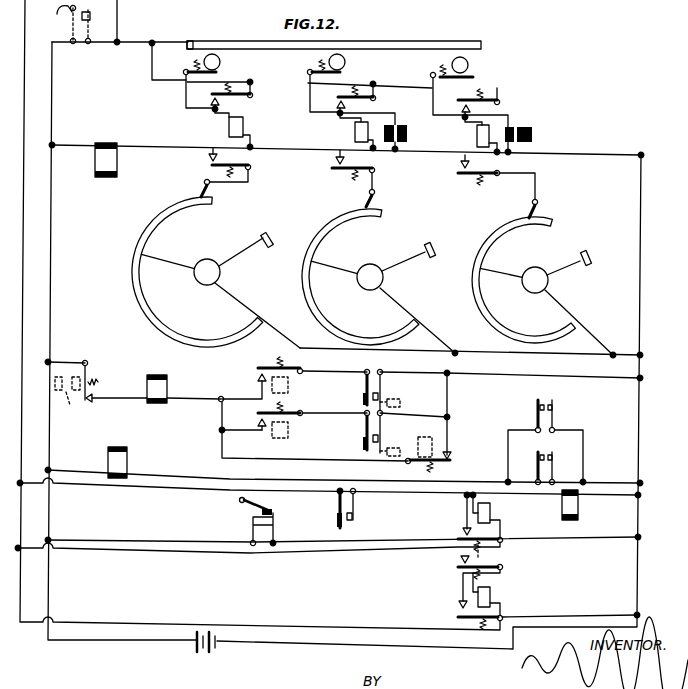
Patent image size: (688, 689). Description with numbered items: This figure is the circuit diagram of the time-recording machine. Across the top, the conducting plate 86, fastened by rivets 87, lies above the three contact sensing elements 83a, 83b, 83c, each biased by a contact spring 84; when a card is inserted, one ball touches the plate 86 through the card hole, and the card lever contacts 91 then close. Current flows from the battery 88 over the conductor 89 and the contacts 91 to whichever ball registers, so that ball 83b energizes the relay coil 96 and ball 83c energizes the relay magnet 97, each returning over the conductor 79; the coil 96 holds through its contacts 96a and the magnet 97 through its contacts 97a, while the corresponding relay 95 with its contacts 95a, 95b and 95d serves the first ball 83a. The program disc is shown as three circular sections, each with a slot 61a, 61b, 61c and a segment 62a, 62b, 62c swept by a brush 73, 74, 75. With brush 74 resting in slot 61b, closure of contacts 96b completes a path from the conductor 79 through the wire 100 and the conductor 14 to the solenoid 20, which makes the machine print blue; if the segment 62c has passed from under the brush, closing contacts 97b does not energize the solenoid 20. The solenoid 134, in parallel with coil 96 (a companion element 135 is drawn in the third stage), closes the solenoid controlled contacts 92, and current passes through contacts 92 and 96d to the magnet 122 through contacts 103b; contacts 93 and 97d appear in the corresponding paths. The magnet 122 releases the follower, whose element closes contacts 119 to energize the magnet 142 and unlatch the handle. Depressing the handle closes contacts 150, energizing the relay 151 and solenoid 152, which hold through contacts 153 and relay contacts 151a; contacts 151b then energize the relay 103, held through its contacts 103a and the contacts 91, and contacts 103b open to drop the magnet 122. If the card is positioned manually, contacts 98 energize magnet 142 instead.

The conductor 14 is at (266, 303).
The solenoid 20 is at (112, 162).
The program disc slot 61a is at (152, 232).
The program disc slot 61b is at (330, 230).
The program disc slot 61c is at (497, 244).
The program disc segment 62a is at (272, 236).
The program disc segment 62b is at (435, 248).
The program disc segment 62c is at (594, 255).
The brush 73 is at (216, 193).
The brush 74 is at (376, 201).
The brush 75 is at (540, 208).
The conductor 79 is at (641, 288).
The contact sensing element 83a is at (221, 63).
The contact sensing element 83b is at (346, 64).
The contact sensing element 83c is at (469, 64).
The contact spring 84 is at (194, 61).
The conducting plate 86 is at (413, 43).
The rivet 87 is at (189, 40).
The battery 88 is at (210, 656).
The conductor 89 is at (50, 305).
The card lever contacts 91 is at (89, 12).
The solenoid controlled contacts 92 is at (383, 400).
The thermostatic switch 93 is at (365, 430).
The relay 95 is at (243, 128).
The relay contact 95a is at (250, 97).
The relay contact 95b is at (211, 161).
The relay contact 95d is at (450, 457).
The relay coil 96 is at (355, 132).
The relay contacts 96a is at (375, 98).
The relay contacts 96b is at (333, 166).
The relay contacts 96d is at (257, 369).
The relay magnet 97 is at (477, 135).
The relay contacts 97a is at (500, 101).
The relay contacts 97b is at (458, 172).
The relay contact 97d is at (222, 417).
The contacts 98 is at (548, 401).
The wire 100 is at (480, 352).
The relay 103 is at (516, 590).
The relay holding contacts 103a is at (458, 606).
The relay contacts 103b is at (92, 392).
The contacts 119 is at (546, 455).
The magnet 122 is at (165, 388).
The solenoid 134 is at (393, 128).
The heater element 135 is at (532, 132).
The magnet 142 is at (127, 462).
The contacts 150 is at (348, 522).
The relay 151 is at (490, 513).
The relay contacts 151a is at (463, 531).
The relay contacts 151b is at (460, 558).
The solenoid 152 is at (578, 512).
The contacts 153 is at (277, 521).